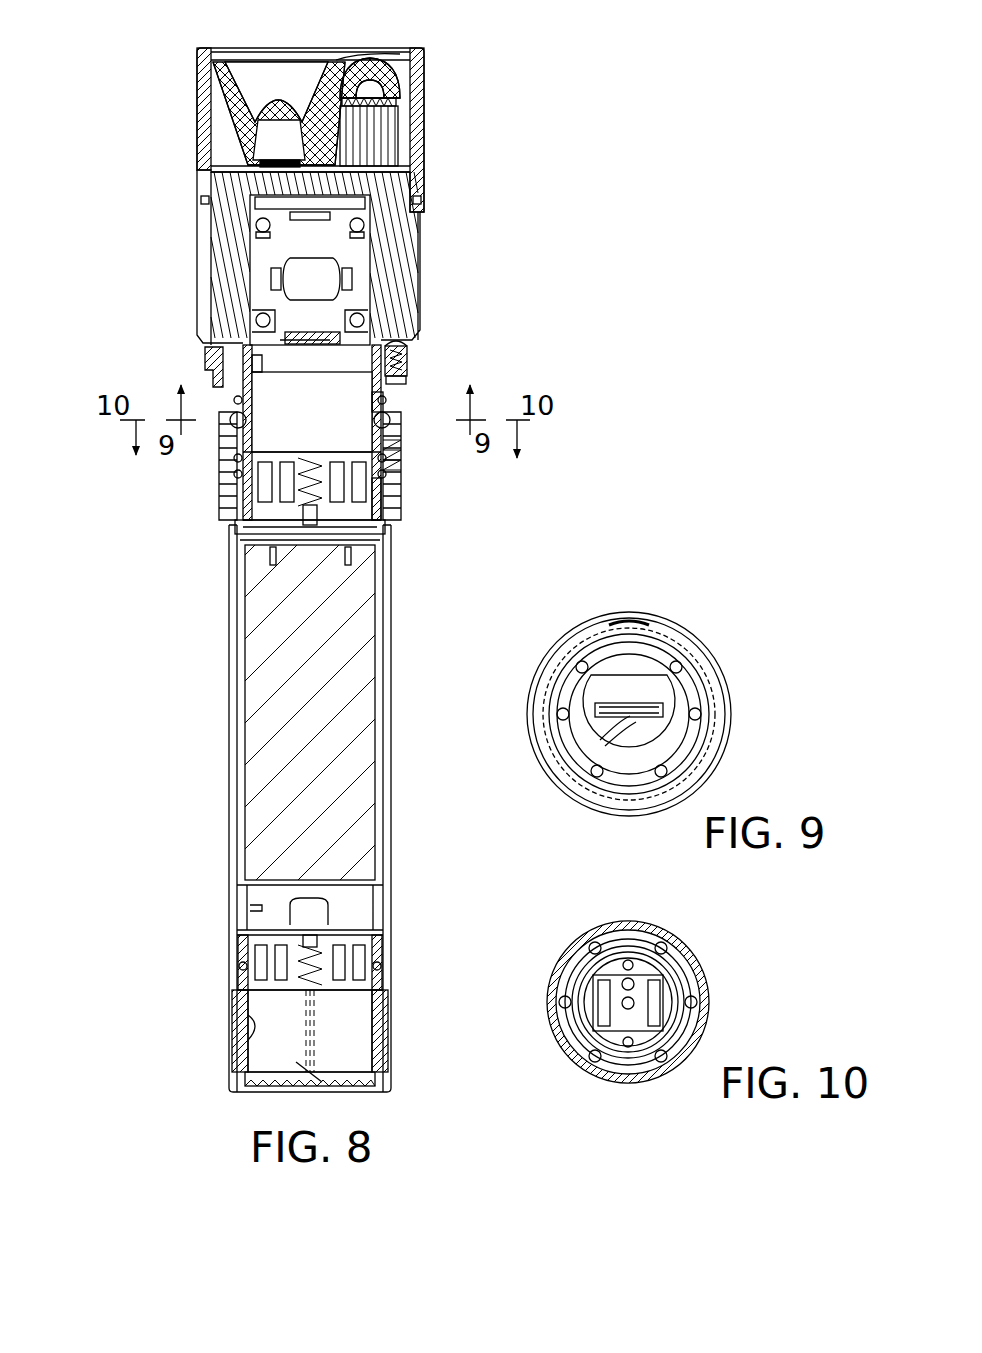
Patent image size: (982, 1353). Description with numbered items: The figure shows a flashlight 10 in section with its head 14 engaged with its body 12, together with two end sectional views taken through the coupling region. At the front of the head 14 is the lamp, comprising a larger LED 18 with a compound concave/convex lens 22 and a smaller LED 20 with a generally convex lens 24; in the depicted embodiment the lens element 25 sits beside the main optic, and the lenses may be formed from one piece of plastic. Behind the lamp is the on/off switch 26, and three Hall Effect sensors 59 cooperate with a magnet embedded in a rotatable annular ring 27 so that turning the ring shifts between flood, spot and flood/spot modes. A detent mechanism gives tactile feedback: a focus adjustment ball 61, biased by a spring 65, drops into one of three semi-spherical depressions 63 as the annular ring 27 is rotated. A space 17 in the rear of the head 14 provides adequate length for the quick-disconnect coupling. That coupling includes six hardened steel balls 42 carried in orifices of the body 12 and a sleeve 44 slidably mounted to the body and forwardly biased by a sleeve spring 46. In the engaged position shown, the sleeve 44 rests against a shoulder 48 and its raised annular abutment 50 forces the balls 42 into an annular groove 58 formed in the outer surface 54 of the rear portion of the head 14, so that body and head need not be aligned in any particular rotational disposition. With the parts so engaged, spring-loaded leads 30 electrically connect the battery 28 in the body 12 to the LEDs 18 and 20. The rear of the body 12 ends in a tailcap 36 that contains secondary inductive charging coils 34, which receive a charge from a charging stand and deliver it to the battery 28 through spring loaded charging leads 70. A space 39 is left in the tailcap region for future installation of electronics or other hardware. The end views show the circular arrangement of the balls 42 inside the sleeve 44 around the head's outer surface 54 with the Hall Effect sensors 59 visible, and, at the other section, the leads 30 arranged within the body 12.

In FIG. 8, the flashlight 10 is at (100, 160).
In FIG. 8, the body 12 is at (232, 614).
In FIG. 10, the body 12 is at (712, 962).
In FIG. 8, the head 14 is at (200, 258).
In FIG. 9, the head 14 is at (740, 731).
In FIG. 8, the space 17 is at (282, 440).
In FIG. 8, the larger LED 18 is at (275, 153).
In FIG. 8, the smaller LED 20 is at (385, 102).
In FIG. 8, the compound concave/convex lens 22 is at (240, 95).
In FIG. 8, the convex lens 24 is at (375, 60).
In FIG. 8, the secondary lens 25 is at (318, 102).
In FIG. 8, the on/off switch 26 is at (322, 282).
In FIG. 9, the on/off switch 26 is at (642, 612).
In FIG. 8, the annular ring 27 is at (210, 358).
In FIG. 8, the battery 28 is at (355, 630).
In FIG. 8, the spring-loaded leads 30 is at (350, 522).
In FIG. 10, the spring-loaded leads 30 is at (690, 1004).
In FIG. 8, the secondary inductive charging coils 34 is at (342, 1078).
In FIG. 8, the tailcap 36 is at (228, 1010).
In FIG. 8, the space 39 is at (255, 1022).
In FIG. 8, the balls 42 is at (388, 420).
In FIG. 9, the balls 42 is at (575, 660).
In FIG. 10, the balls 42 is at (668, 950).
In FIG. 8, the sleeve 44 is at (225, 482).
In FIG. 9, the sleeve 44 is at (552, 708).
In FIG. 10, the sleeve 44 is at (548, 1005).
In FIG. 8, the sleeve spring 46 is at (386, 462).
In FIG. 8, the shoulder 48 is at (385, 411).
In FIG. 8, the raised annular abutment 50 is at (366, 448).
In FIG. 8, the outer surface 54 is at (382, 484).
In FIG. 9, the outer surface 54 is at (698, 700).
In FIG. 8, the annular groove 58 is at (250, 422).
In FIG. 8, the Hall Effect sensors 59 is at (310, 345).
In FIG. 9, the Hall Effect sensors 59 is at (610, 752).
In FIG. 8, the focus adjustment ball 61 is at (408, 360).
In FIG. 8, the semi-spherical depression 63 is at (402, 346).
In FIG. 8, the spring 65 is at (398, 382).
In FIG. 8, the spring loaded charging leads 70 is at (322, 950).